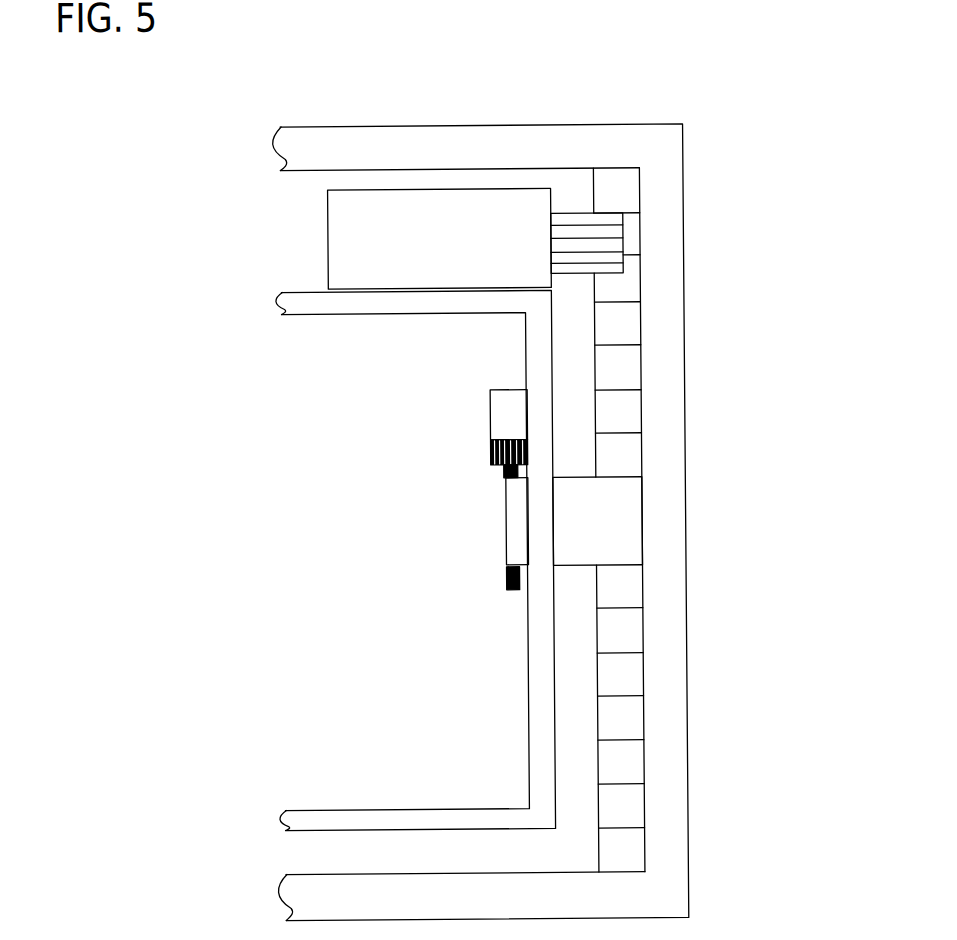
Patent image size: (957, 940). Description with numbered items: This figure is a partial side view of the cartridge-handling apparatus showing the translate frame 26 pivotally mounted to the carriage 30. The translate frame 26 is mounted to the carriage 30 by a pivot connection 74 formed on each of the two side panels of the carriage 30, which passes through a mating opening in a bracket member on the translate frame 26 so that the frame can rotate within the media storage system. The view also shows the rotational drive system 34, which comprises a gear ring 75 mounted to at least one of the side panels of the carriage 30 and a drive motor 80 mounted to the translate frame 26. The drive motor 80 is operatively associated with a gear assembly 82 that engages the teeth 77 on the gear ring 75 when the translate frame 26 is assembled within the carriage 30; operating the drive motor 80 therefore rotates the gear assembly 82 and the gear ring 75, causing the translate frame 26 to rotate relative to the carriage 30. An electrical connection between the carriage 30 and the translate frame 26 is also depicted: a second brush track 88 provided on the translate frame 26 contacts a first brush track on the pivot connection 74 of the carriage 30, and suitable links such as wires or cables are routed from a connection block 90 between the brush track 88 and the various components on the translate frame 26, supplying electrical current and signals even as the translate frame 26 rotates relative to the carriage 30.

The carriage 30 is at (545, 126).
The translate frame 26 is at (401, 318).
The rotational drive system 34 is at (572, 186).
The drive motor 80 is at (330, 216).
The gear assembly 82 is at (609, 214).
The gear ring 75 is at (595, 313).
The teeth 77 is at (607, 435).
The connection block 90 is at (488, 415).
The second brush track 88 is at (490, 457).
The pivot connection 74 is at (505, 523).